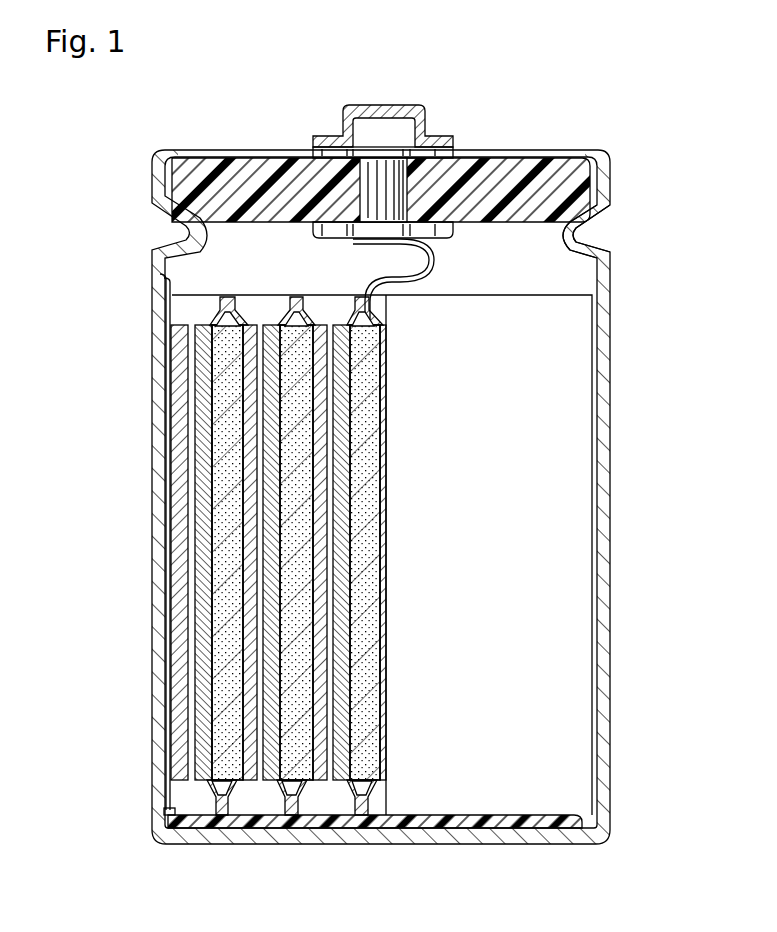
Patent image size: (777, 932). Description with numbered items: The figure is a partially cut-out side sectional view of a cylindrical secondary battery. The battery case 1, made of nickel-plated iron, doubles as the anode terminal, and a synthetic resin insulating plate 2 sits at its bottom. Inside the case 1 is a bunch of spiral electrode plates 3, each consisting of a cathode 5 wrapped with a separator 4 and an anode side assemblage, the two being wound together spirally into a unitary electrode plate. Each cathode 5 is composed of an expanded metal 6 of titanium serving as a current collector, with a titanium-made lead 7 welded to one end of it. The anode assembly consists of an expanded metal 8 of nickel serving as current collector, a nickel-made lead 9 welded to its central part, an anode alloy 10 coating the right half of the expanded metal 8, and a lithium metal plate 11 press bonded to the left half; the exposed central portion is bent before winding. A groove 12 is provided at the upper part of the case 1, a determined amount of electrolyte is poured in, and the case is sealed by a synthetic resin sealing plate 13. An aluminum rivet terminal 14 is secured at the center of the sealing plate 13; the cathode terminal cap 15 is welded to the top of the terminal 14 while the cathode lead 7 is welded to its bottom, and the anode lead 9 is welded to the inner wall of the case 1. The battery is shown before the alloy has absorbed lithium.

The battery case 1 is at (612, 526).
The insulating plate 2 is at (528, 818).
The spiral electrode plates 3 is at (560, 428).
The separator 4 is at (320, 780).
The cathode 5 is at (279, 790).
The expanded metal 6 is at (387, 780).
The lead 7 is at (437, 262).
The expanded metal 8 is at (172, 810).
The lead 9 is at (152, 278).
The anode alloy 10 is at (330, 780).
The lithium metal plate 11 is at (345, 780).
The groove 12 is at (590, 241).
The sealing plate 13 is at (480, 180).
The rivet terminal 14 is at (385, 176).
The cathode terminal cap 15 is at (383, 105).